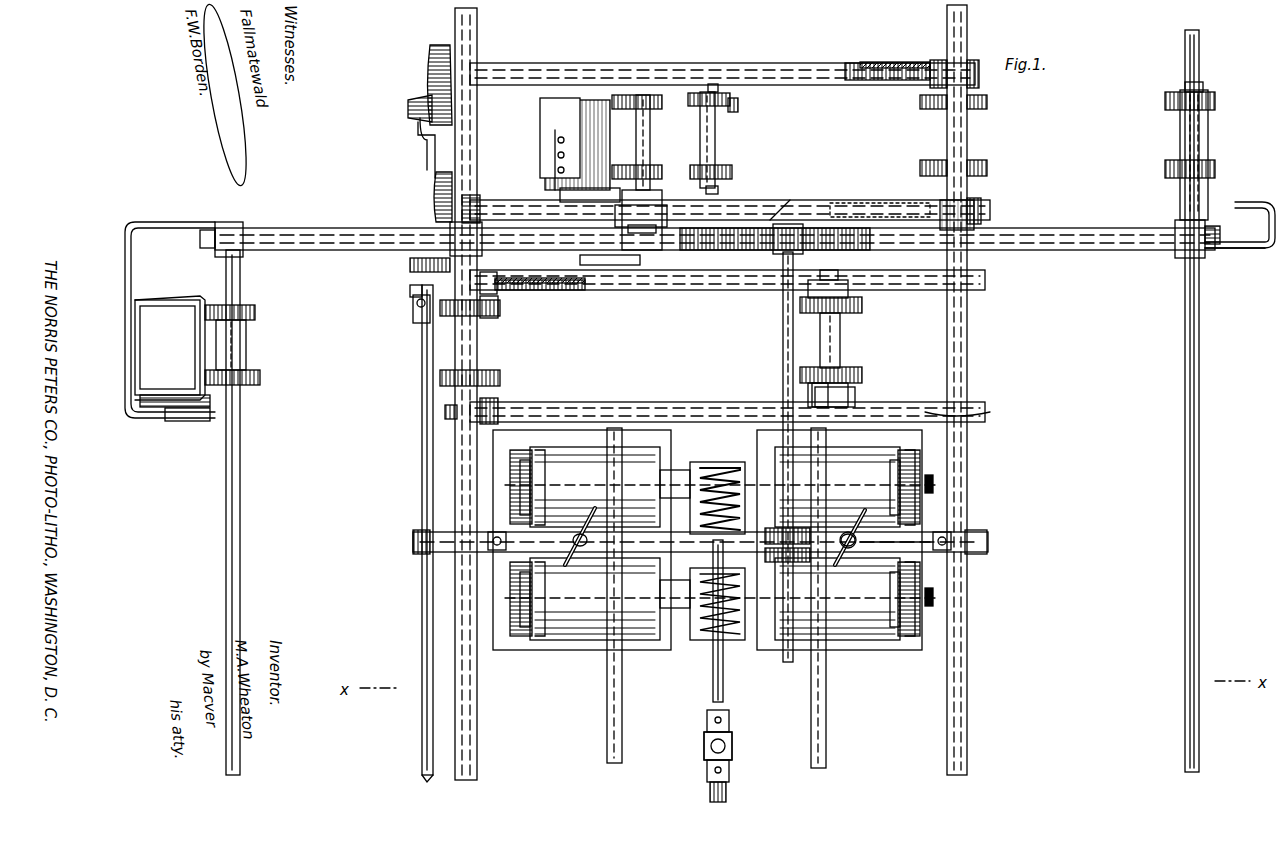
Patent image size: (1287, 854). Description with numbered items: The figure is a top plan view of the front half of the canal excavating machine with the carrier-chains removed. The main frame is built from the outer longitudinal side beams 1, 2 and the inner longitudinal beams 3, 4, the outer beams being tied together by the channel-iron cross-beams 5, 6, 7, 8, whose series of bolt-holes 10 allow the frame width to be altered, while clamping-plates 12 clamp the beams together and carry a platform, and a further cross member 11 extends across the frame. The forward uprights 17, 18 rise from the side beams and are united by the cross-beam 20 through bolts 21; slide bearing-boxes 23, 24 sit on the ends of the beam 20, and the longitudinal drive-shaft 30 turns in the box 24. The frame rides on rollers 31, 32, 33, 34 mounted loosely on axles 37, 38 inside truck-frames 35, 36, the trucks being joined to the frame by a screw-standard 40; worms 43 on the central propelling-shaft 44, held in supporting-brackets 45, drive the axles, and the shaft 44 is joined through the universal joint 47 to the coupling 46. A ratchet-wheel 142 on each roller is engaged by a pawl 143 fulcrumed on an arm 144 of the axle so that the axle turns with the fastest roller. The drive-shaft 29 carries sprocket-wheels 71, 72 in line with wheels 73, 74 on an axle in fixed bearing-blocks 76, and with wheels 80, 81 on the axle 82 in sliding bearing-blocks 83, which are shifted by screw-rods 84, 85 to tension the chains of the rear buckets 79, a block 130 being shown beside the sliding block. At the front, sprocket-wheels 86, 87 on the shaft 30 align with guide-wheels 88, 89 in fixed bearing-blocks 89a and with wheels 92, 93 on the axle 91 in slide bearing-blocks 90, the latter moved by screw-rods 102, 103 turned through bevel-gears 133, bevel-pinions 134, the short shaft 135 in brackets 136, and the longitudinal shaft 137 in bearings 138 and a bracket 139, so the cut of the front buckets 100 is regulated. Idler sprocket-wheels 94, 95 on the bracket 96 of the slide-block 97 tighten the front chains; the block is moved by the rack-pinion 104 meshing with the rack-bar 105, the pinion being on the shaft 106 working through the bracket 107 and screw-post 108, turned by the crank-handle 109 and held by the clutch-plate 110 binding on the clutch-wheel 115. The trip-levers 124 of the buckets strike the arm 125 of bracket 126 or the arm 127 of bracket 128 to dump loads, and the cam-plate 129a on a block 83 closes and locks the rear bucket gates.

The outer longitudinal side beam 1 is at (462, 466).
The outer longitudinal side beam 2 is at (962, 380).
The inner longitudinal beam 3 is at (607, 687).
The inner longitudinal beam 4 is at (826, 690).
The channel-iron cross-beam 5 is at (818, 52).
The channel-iron cross-beam 6 is at (800, 200).
The channel-iron cross-beam 7 is at (715, 290).
The channel-iron cross-beam 8 is at (698, 403).
The bolt-holes 10 is at (890, 66).
The cross bar 11 is at (700, 542).
The clamping-plate 12 is at (987, 540).
The upright 17 is at (478, 212).
The upright 18 is at (975, 215).
The cross-beam 20 is at (1035, 248).
The bolts 21 is at (468, 220).
The slide bearing-box 23 is at (243, 255).
The slide bearing-box 24 is at (1178, 250).
The drive-shaft 29 is at (240, 470).
The longitudinal drive-shaft 30 is at (1185, 458).
The roller 31 is at (650, 460).
The roller 32 is at (870, 458).
The roller 33 is at (560, 628).
The roller 34 is at (870, 628).
The truck-frame 35 is at (660, 645).
The truck-frame 36 is at (788, 645).
The axle 37 is at (935, 486).
The axle 38 is at (935, 598).
The screw-standard 40 is at (572, 542).
The worm 43 is at (675, 498).
The central propelling-shaft 44 is at (723, 690).
The supporting-bracket 45 is at (730, 460).
The coupling 46 is at (728, 785).
The universal joint 47 is at (697, 746).
The sprocket-wheel 71 is at (256, 312).
The sprocket-wheel 72 is at (260, 377).
The sprocket-wheel 73 is at (500, 310).
The sprocket-wheel 74 is at (500, 376).
The fixed bearing-block 76 is at (498, 300).
The rear bucket 79 is at (170, 348).
The sprocket-wheel 80 is at (862, 312).
The sprocket-wheel 81 is at (847, 376).
The axle 82 is at (848, 288).
The sliding bearing-block 83 is at (808, 286).
The screw-rod 84 is at (550, 288).
The screw-rod 85 is at (446, 416).
The sprocket-wheel 86 is at (1165, 100).
The sprocket-wheel 87 is at (1165, 170).
The sprocket guide-wheel 88 is at (920, 102).
The sprocket guide-wheel 89 is at (920, 168).
The fixed bearing-block 89a is at (938, 60).
The slide bearing-block 90 is at (730, 88).
The axle 91 is at (712, 72).
The sprocket-wheel 92 is at (738, 106).
The sprocket-wheel 93 is at (735, 168).
The idler sprocket-wheel 94 is at (652, 95).
The idler sprocket-wheel 95 is at (660, 170).
The shaft or bracket 96 is at (635, 95).
The slide-block 97 is at (672, 252).
The front bucket 100 is at (580, 150).
The screw-rod 102 is at (860, 82).
The screw-rod 103 is at (838, 200).
The rack-pinion 104 is at (780, 215).
The rack-bar 105 is at (710, 250).
The shaft 106 is at (783, 340).
The bracket 107 is at (805, 250).
The screw-post 108 is at (765, 540).
The crank-handle 109 is at (835, 620).
The clutch-plate 110 is at (833, 541).
The clutch-wheel 115 is at (935, 520).
The trip-lever 124 is at (585, 215).
The arm 125 is at (148, 420).
The bracket 126 is at (152, 232).
The arm 127 is at (1245, 202).
The bracket 128 is at (1248, 252).
The cam-plate 129a is at (648, 192).
The block 130 is at (808, 395).
The bevel-gear 133 is at (430, 52).
The bevel-pinion 134 is at (408, 107).
The short longitudinal shaft 135 is at (422, 150).
The bracket 136 is at (418, 128).
The longitudinal shaft 137 is at (422, 395).
The bearing 138 is at (415, 552).
The bracket 139 is at (415, 320).
The ratchet-wheel 142 is at (520, 488).
The pawl 143 is at (525, 455).
The arm 144 is at (525, 466).